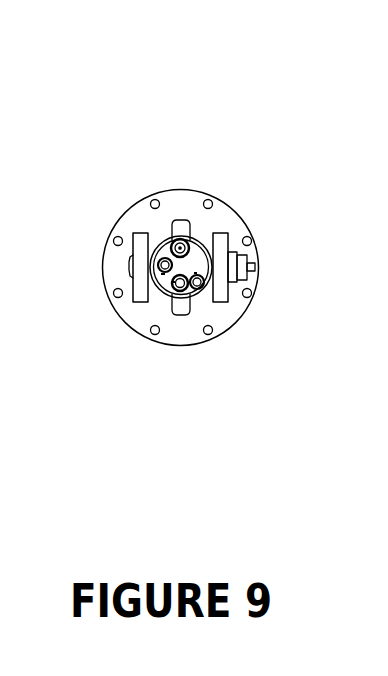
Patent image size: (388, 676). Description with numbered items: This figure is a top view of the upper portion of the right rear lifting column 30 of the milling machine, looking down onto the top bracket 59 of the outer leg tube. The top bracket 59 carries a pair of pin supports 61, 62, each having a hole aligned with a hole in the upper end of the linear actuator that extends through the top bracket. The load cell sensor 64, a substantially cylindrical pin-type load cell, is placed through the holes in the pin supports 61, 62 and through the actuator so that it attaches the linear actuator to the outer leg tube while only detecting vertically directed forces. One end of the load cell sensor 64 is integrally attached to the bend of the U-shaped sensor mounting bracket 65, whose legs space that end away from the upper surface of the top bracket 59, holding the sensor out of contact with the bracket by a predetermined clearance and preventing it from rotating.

The right rear lifting column 30 is at (208, 167).
The top bracket 59 is at (147, 195).
The pin support 61 is at (142, 245).
The pin support 62 is at (222, 288).
The load cell sensor 64 is at (257, 265).
The sensor mounting bracket 65 is at (237, 245).